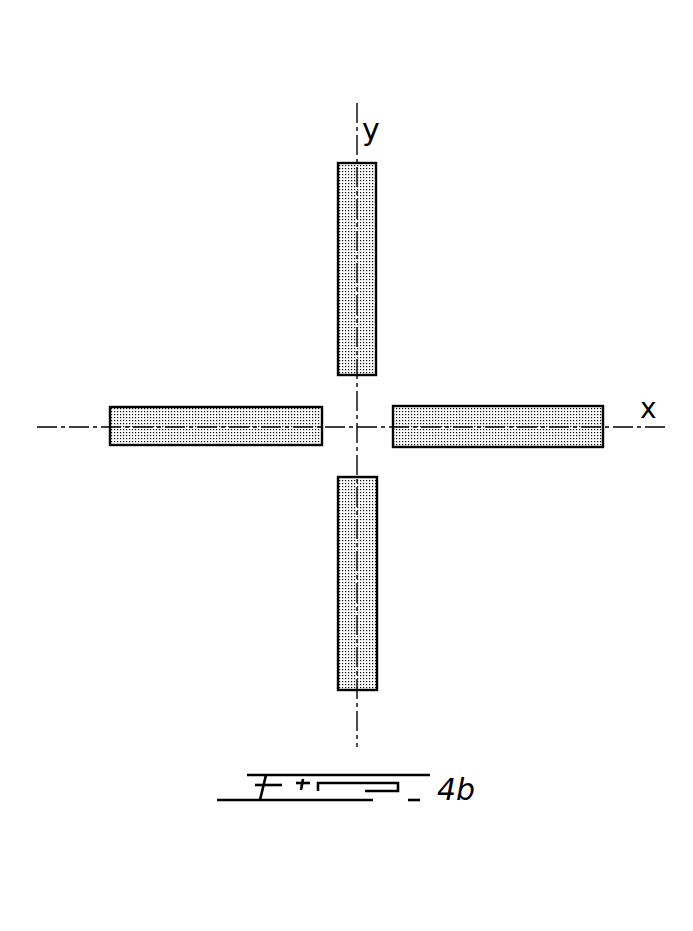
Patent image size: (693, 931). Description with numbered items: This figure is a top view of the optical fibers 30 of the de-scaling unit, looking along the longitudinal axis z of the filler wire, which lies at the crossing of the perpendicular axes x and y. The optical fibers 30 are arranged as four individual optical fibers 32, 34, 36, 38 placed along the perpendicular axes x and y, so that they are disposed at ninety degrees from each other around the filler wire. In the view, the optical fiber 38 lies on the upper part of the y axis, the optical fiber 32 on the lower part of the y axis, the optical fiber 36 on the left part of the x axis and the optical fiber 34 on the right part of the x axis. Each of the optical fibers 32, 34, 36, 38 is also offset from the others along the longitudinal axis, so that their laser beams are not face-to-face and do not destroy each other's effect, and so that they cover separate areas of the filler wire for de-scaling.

The optical fibers 30 is at (548, 218).
The optical fiber 32 is at (338, 584).
The optical fiber 34 is at (497, 447).
The optical fiber 36 is at (217, 407).
The optical fiber 38 is at (377, 272).